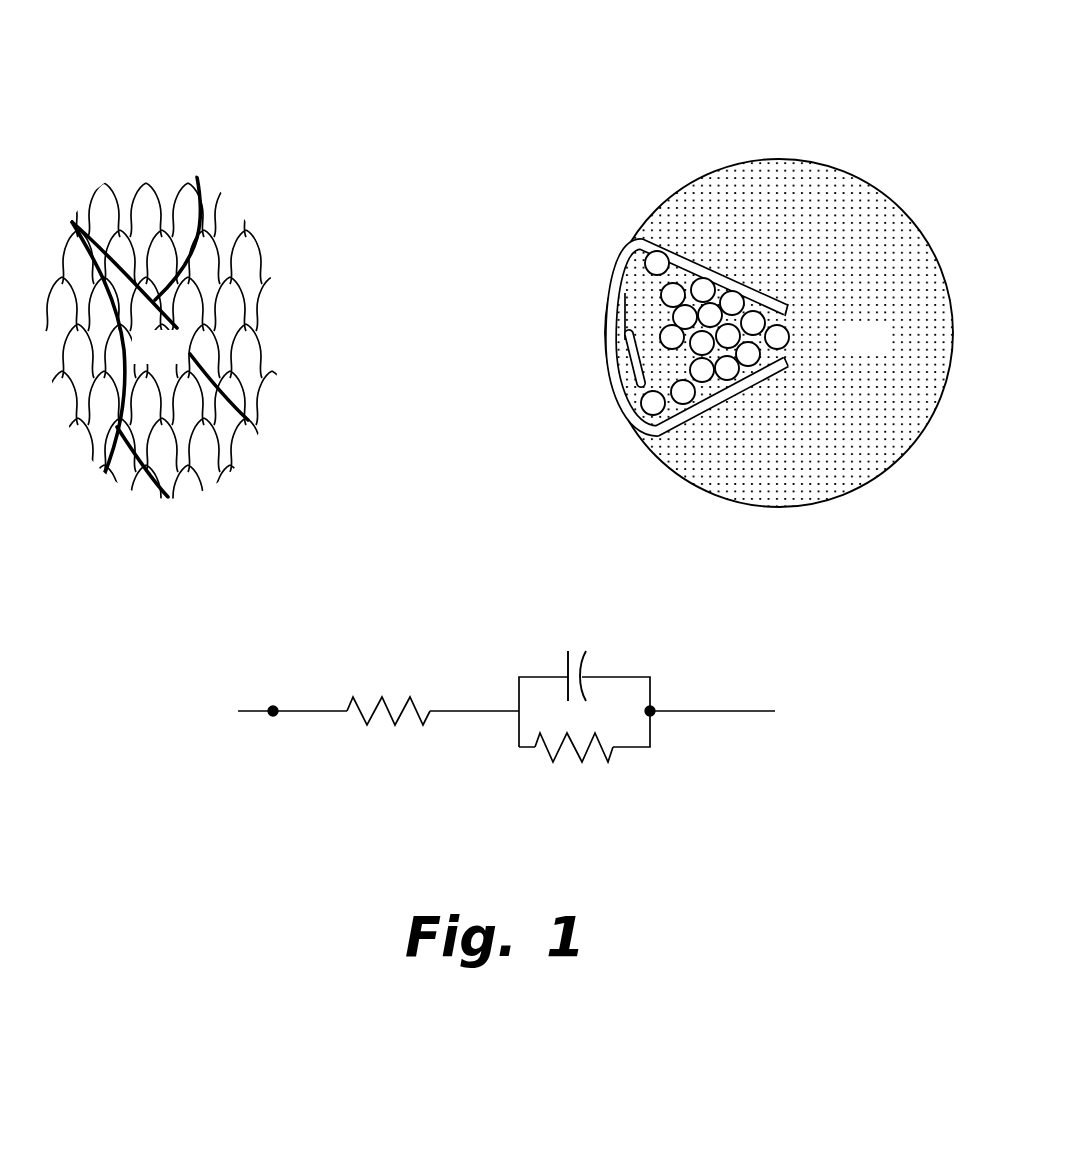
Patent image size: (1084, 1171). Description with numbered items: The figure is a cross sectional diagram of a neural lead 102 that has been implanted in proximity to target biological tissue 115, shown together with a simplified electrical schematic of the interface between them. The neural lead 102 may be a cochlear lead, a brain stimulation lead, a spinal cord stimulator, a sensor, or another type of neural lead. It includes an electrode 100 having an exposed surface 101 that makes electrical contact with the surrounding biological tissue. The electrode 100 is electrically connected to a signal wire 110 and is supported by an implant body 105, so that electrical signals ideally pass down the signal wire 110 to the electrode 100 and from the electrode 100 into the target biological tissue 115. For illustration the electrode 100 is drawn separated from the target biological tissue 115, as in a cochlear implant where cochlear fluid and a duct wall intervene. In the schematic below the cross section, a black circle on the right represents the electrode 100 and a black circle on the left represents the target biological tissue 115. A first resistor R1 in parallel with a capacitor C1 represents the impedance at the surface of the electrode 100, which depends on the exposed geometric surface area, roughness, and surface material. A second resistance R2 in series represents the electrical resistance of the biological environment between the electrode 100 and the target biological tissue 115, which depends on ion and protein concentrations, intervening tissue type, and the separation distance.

The electrode 100 is at (609, 327).
The exposed surface 101 is at (612, 285).
The neural lead 102 is at (667, 127).
The implant body 105 is at (884, 352).
The signal wire 110 is at (627, 357).
The target biological tissue 115 is at (177, 362).
The first resistor R1 is at (574, 769).
The second resistance R2 is at (388, 733).
The capacitor C1 is at (582, 651).